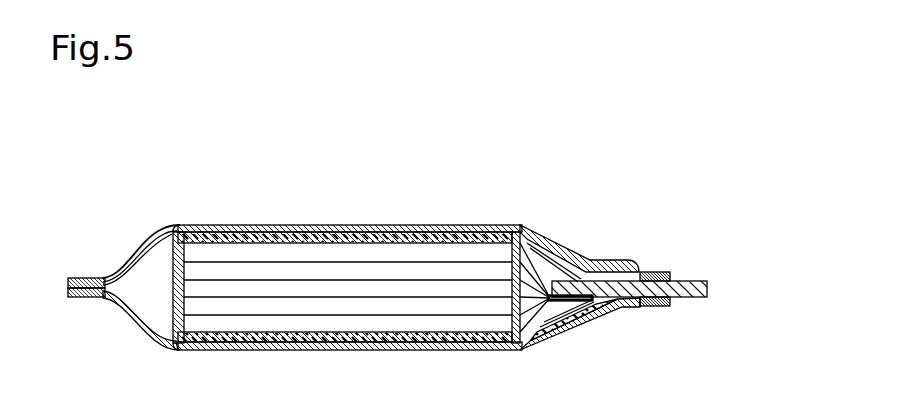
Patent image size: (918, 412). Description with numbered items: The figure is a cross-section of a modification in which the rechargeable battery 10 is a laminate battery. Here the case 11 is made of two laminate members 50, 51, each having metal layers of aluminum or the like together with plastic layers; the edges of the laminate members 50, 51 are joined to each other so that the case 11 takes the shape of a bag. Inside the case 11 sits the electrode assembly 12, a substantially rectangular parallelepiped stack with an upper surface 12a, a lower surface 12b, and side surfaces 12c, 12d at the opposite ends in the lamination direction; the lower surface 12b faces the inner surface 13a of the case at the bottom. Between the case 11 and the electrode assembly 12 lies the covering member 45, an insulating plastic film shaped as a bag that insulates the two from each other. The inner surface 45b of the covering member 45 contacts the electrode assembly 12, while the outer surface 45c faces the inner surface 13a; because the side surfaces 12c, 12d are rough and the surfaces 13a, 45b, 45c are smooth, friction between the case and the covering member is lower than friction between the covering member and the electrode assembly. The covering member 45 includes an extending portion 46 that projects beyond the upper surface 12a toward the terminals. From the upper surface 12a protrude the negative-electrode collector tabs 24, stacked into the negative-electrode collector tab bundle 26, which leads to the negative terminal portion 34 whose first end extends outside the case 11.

The rechargeable battery 10 is at (621, 181).
The case 11 is at (63, 237).
The laminate member 50 is at (100, 277).
The laminate member 51 is at (104, 302).
The electrode assembly 12 is at (175, 352).
The upper surface 12a is at (526, 228).
The lower surface 12b is at (150, 330).
The side surface 12c is at (363, 227).
The side surface 12d is at (401, 350).
The inner surface 13a is at (143, 270).
The covering member 45 is at (345, 265).
The inner surface 45b is at (194, 236).
The outer surface 45c is at (248, 232).
The extending portion 46 is at (542, 241).
The negative-electrode collector tab 24 is at (523, 352).
The negative-electrode collector tab bundle 26 is at (564, 311).
The negative terminal portion 34 is at (690, 299).